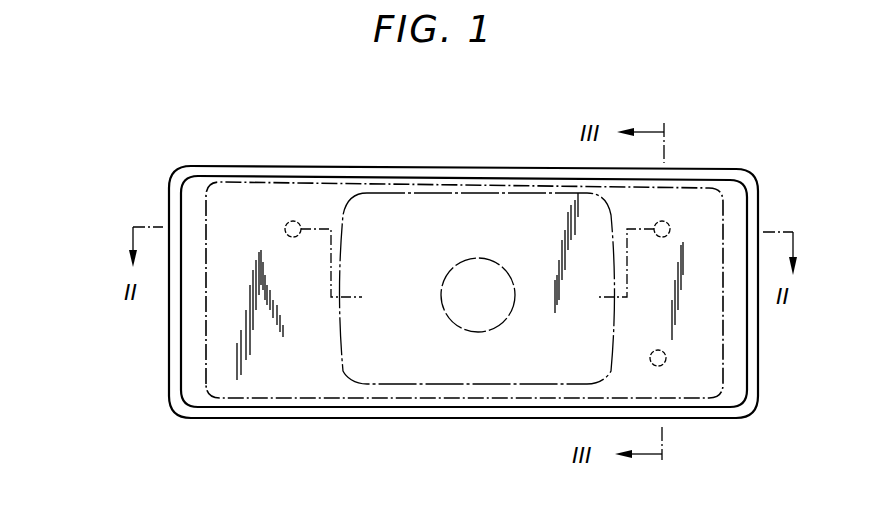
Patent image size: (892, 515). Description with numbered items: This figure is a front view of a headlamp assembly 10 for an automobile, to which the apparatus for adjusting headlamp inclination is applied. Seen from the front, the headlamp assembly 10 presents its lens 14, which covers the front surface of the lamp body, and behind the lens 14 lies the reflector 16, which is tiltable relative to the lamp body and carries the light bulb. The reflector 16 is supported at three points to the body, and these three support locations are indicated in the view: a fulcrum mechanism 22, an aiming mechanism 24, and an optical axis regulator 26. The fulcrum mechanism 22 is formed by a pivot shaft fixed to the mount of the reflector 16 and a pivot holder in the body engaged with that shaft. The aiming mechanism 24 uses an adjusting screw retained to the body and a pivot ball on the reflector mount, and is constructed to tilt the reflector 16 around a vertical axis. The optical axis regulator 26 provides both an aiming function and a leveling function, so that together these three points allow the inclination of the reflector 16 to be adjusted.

The headlamp assembly 10 is at (490, 165).
The lens 14 is at (202, 188).
The reflector 16 is at (284, 382).
The fulcrum mechanism 22 is at (668, 223).
The aiming mechanism 24 is at (285, 229).
The optical axis regulator 26 is at (664, 363).